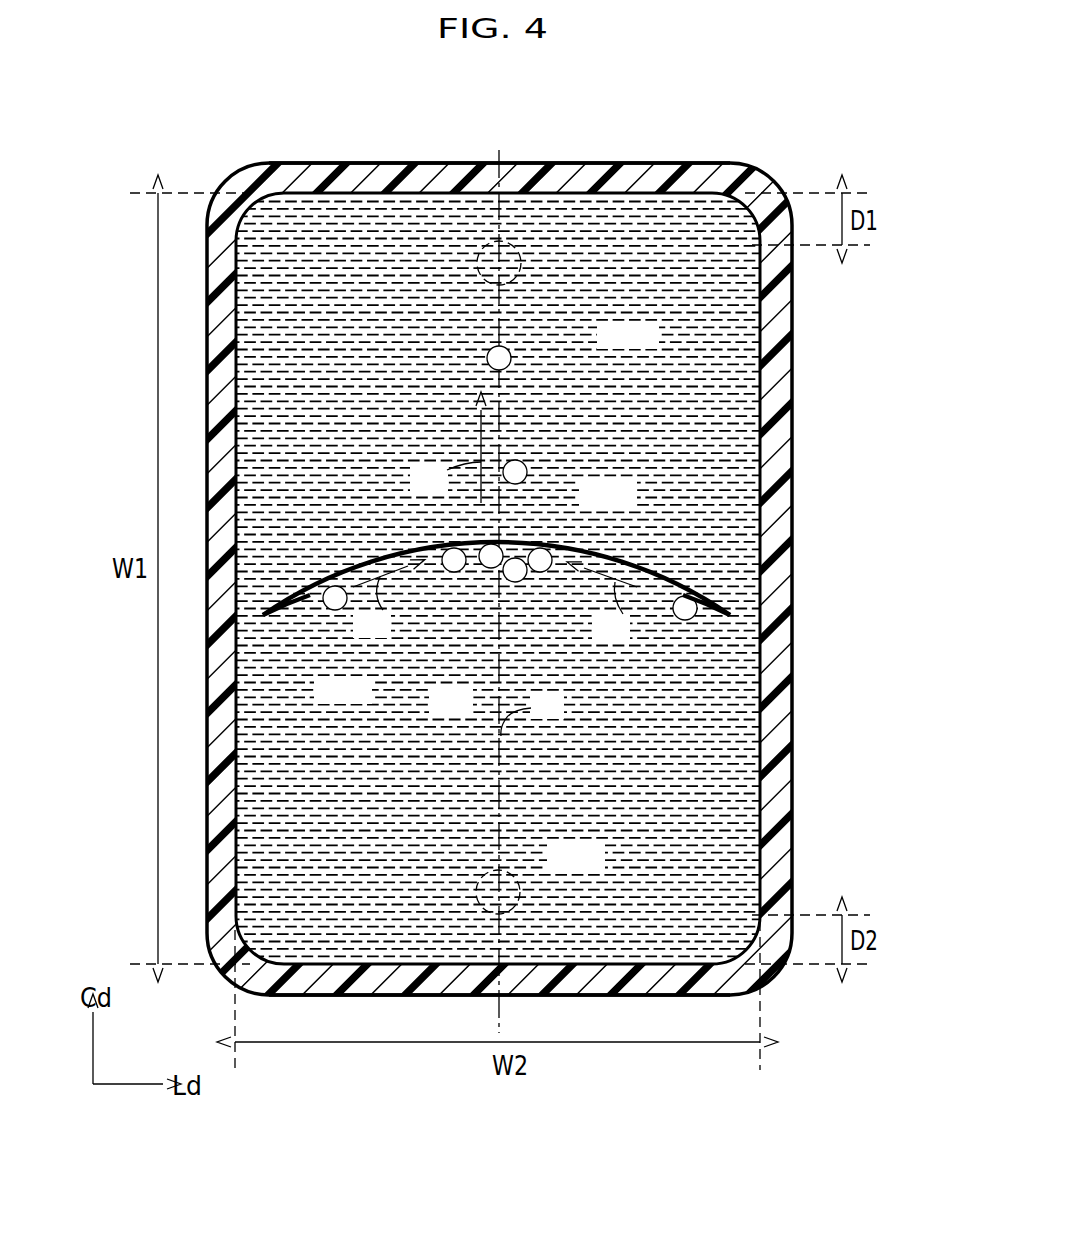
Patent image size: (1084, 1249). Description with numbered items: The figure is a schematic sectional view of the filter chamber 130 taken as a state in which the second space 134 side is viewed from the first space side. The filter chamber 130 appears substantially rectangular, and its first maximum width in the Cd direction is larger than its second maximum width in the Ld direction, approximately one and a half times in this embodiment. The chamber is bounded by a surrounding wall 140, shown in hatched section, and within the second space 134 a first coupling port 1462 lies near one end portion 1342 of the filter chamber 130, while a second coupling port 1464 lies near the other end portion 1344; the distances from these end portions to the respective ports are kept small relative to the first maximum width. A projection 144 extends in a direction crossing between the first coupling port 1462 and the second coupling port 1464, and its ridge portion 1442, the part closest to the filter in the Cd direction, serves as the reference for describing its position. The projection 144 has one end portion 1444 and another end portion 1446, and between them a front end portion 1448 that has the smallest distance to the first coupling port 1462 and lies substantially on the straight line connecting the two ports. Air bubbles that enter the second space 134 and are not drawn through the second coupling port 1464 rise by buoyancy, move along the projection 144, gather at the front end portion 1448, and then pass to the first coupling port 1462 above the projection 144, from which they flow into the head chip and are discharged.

The filter chamber 130 is at (542, 588).
The second space 134 is at (471, 712).
The frame (hatched border) 140 is at (791, 393).
The one end portion 1342 is at (560, 200).
The other end portion 1344 is at (640, 960).
The ridge portion 1442 is at (710, 598).
The projection 144 is at (596, 578).
The one end portion 1444 is at (265, 617).
The other end portion 1446 is at (732, 617).
The front end portion 1448 is at (502, 540).
The first coupling port 1462 is at (520, 270).
The second coupling port 1464 is at (505, 872).